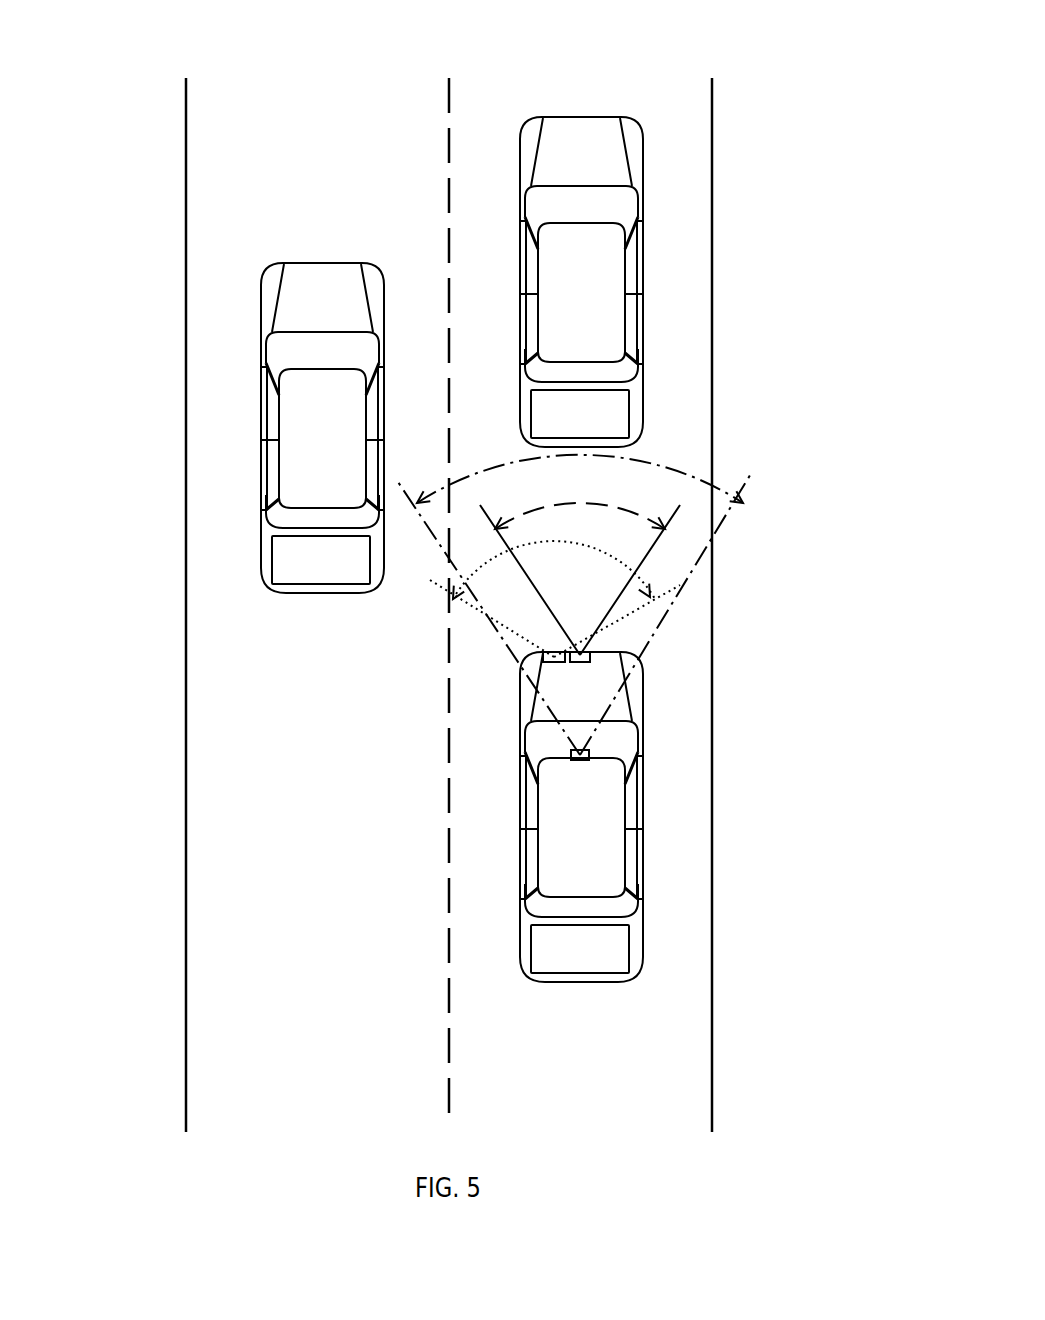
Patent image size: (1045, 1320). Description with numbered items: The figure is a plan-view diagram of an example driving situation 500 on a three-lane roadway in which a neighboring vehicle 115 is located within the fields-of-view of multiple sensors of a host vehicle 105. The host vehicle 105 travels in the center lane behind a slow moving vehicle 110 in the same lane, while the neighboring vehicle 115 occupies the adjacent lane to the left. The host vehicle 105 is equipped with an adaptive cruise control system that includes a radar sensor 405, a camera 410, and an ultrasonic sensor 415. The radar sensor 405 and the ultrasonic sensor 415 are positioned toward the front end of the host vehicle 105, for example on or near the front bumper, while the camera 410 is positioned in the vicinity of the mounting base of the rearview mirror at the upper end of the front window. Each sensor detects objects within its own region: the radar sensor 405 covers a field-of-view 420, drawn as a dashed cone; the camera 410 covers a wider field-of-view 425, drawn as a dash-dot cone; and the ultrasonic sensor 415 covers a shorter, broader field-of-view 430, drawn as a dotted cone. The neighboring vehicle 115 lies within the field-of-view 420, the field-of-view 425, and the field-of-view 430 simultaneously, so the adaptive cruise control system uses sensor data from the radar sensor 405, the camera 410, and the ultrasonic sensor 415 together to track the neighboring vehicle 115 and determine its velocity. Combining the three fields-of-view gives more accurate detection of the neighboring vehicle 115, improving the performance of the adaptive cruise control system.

The driving situation 500 is at (122, 58).
The host vehicle 105 is at (580, 982).
The slow moving vehicle 110 is at (577, 117).
The neighboring vehicle 115 is at (318, 263).
The radar sensor 405 is at (578, 657).
The camera 410 is at (580, 755).
The ultrasonic sensor 415 is at (552, 658).
The field-of-view 420 is at (660, 562).
The field-of-view 425 is at (723, 522).
The field-of-view 430 is at (655, 599).